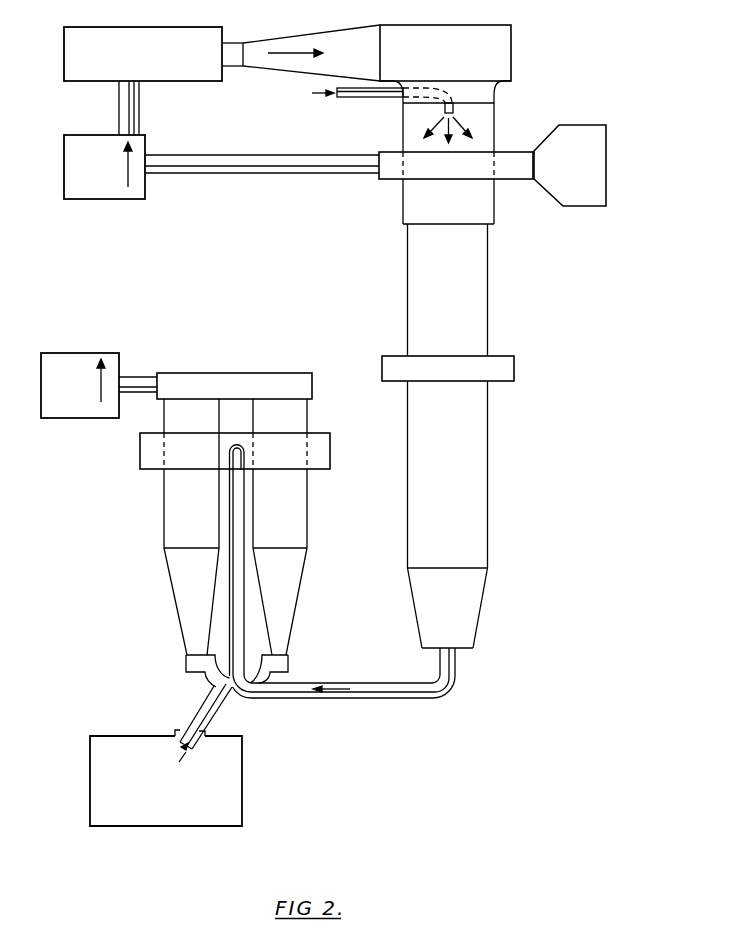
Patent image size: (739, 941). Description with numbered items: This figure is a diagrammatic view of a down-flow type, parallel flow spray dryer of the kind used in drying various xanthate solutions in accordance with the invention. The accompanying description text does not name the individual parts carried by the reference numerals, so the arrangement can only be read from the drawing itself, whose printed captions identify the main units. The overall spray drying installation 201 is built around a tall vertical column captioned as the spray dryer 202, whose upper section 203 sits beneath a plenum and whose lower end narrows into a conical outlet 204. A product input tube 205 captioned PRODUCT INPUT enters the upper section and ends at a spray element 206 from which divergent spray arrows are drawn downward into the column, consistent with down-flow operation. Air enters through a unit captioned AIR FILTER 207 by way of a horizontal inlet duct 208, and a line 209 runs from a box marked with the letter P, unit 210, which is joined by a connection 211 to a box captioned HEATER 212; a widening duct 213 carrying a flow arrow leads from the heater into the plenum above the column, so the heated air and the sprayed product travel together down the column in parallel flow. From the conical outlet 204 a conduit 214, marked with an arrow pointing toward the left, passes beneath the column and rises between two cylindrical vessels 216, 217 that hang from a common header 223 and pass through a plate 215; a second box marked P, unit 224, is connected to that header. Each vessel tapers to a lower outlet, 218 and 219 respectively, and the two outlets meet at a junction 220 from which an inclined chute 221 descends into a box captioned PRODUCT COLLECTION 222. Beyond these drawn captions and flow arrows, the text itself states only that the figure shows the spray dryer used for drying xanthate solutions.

The spray drying system 201 is at (384, 271).
The spray dryer 202 is at (488, 333).
The spray dryer top plenum section 203 is at (500, 87).
The conical bottom outlet of spray dryer 204 is at (474, 646).
The product input tube 205 is at (371, 97).
The spray nozzle 206 is at (453, 108).
The air filter 207 is at (580, 204).
The air inlet duct 208 is at (498, 178).
The pump discharge pipe 209 is at (230, 167).
The pump 210 is at (82, 199).
The pipe from heater to pump 211 is at (119, 108).
The heater 212 is at (164, 28).
The heated air duct 213 is at (348, 33).
The product transfer conduit 214 is at (346, 693).
The support plate 215 is at (329, 451).
The first cyclone separator 216 is at (164, 524).
The second cyclone separator 217 is at (307, 523).
The first cyclone outlet 218 is at (187, 640).
The second cyclone outlet 219 is at (287, 640).
The outlet junction 220 is at (206, 676).
The discharge chute 221 is at (205, 704).
The product collection 222 is at (240, 776).
The cyclone header manifold 223 is at (268, 375).
The cyclone pump 224 is at (60, 418).